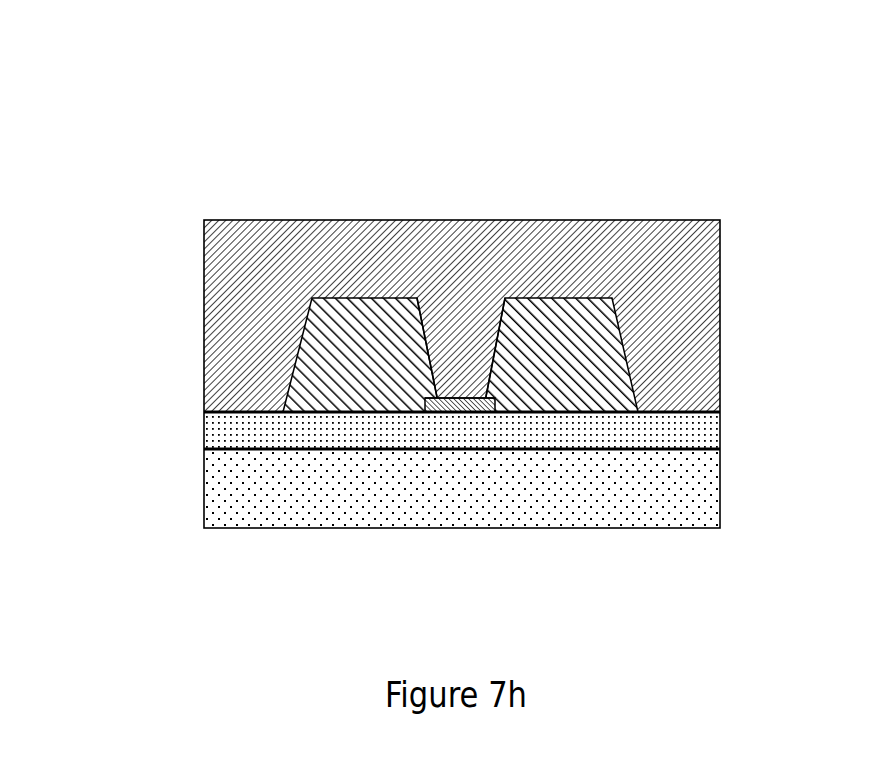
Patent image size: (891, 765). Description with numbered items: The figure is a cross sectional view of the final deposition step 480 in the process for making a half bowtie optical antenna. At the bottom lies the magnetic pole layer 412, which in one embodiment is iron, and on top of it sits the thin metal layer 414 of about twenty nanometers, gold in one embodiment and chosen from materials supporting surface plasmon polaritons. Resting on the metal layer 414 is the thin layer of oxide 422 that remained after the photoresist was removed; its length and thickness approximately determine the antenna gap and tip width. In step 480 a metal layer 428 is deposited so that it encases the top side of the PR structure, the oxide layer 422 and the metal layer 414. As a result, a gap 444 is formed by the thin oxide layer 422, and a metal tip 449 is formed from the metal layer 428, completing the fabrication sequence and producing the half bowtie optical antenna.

The deposition step 480 is at (647, 161).
The metal layer 428 is at (698, 283).
The metal tip 449 is at (463, 345).
The thin layer of oxide 422 is at (440, 401).
The gap 444 is at (460, 414).
The thin metal layer 414 is at (722, 411).
The magnetic pole layer 412 is at (708, 513).